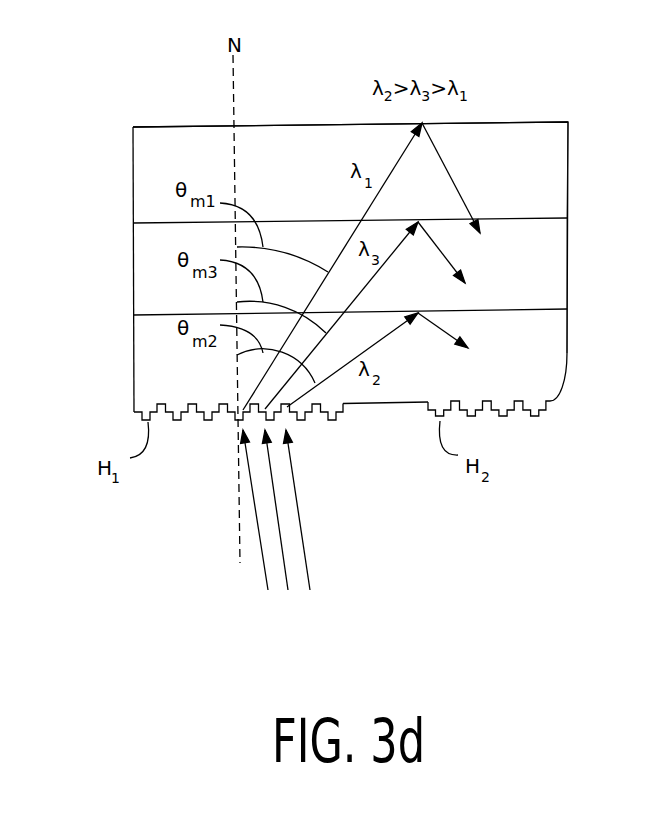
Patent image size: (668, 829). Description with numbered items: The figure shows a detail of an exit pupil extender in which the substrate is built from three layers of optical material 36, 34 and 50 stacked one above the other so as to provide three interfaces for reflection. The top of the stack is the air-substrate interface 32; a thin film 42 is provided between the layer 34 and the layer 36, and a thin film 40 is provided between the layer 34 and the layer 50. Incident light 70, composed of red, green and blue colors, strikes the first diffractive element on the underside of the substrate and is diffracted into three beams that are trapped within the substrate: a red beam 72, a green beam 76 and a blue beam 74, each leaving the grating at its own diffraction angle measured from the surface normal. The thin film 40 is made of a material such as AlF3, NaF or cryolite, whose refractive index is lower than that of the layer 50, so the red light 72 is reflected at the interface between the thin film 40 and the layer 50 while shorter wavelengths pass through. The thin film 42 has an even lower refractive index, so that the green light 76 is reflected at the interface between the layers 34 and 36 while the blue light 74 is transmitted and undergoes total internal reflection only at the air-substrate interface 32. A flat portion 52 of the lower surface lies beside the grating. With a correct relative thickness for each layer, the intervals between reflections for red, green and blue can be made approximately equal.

The air-substrate interface 32 is at (157, 126).
The thin film 42 is at (140, 222).
The thin film 40 is at (142, 314).
The layer of optical material 36 is at (558, 183).
The layer of optical material 34 is at (553, 277).
The second layer of optical material 50 is at (552, 363).
The flat grating-free region 52 is at (400, 403).
The incident light 70 is at (317, 600).
The diffracted beam (blue) 74 is at (442, 162).
The diffracted beam (green) 76 is at (437, 245).
The diffracted beam (red) 72 is at (436, 327).